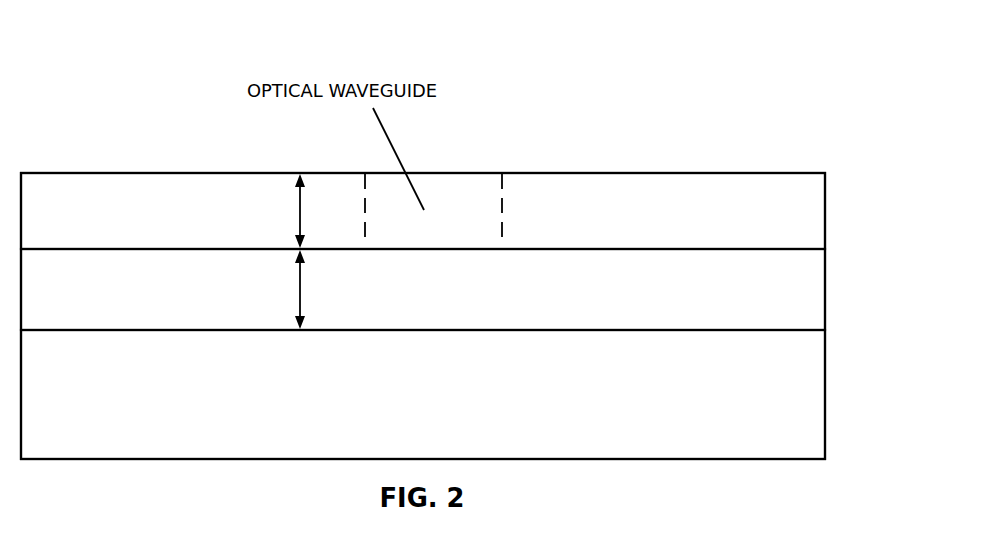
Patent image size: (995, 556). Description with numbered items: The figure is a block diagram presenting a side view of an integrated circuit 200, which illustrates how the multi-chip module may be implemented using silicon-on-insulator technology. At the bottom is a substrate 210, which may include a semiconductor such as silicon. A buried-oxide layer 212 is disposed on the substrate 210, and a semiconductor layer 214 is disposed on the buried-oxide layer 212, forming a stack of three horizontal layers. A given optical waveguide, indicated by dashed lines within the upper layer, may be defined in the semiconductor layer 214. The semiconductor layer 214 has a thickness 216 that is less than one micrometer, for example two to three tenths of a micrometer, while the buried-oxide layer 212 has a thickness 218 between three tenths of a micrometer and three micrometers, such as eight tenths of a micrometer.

The integrated circuit 200 is at (632, 63).
The substrate 210 is at (423, 394).
The buried-oxide layer 212 is at (423, 289).
The semiconductor layer 214 is at (423, 211).
The thickness 216 is at (298, 222).
The thickness 218 is at (298, 305).